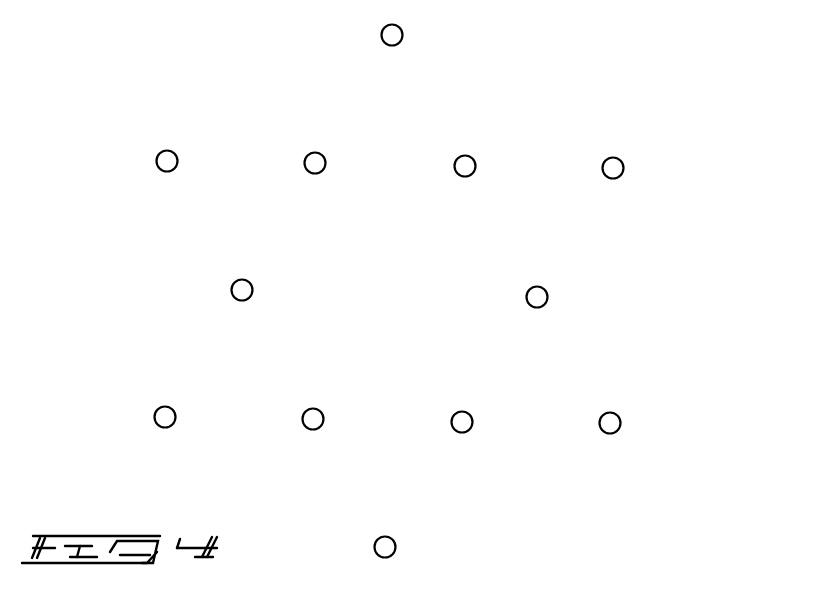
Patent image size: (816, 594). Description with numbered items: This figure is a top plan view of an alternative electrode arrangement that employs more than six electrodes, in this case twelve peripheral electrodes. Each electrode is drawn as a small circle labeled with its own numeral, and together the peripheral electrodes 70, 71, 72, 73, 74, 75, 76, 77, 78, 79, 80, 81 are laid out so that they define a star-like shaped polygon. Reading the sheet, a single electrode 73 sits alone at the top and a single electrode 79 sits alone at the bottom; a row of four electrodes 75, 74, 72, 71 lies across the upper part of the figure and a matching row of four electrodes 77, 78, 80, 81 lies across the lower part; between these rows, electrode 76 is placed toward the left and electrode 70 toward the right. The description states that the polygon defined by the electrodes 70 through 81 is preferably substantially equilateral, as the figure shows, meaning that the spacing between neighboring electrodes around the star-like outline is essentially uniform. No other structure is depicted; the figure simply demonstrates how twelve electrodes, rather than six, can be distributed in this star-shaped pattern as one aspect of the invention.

The peripheral electrode 70 is at (537, 297).
The peripheral electrode 71 is at (613, 168).
The peripheral electrode 72 is at (465, 166).
The peripheral electrode 73 is at (392, 35).
The peripheral electrode 74 is at (315, 163).
The peripheral electrode 75 is at (167, 161).
The peripheral electrode 76 is at (242, 290).
The peripheral electrode 77 is at (165, 417).
The peripheral electrode 78 is at (313, 419).
The peripheral electrode 79 is at (385, 547).
The peripheral electrode 80 is at (462, 422).
The peripheral electrode 81 is at (610, 423).